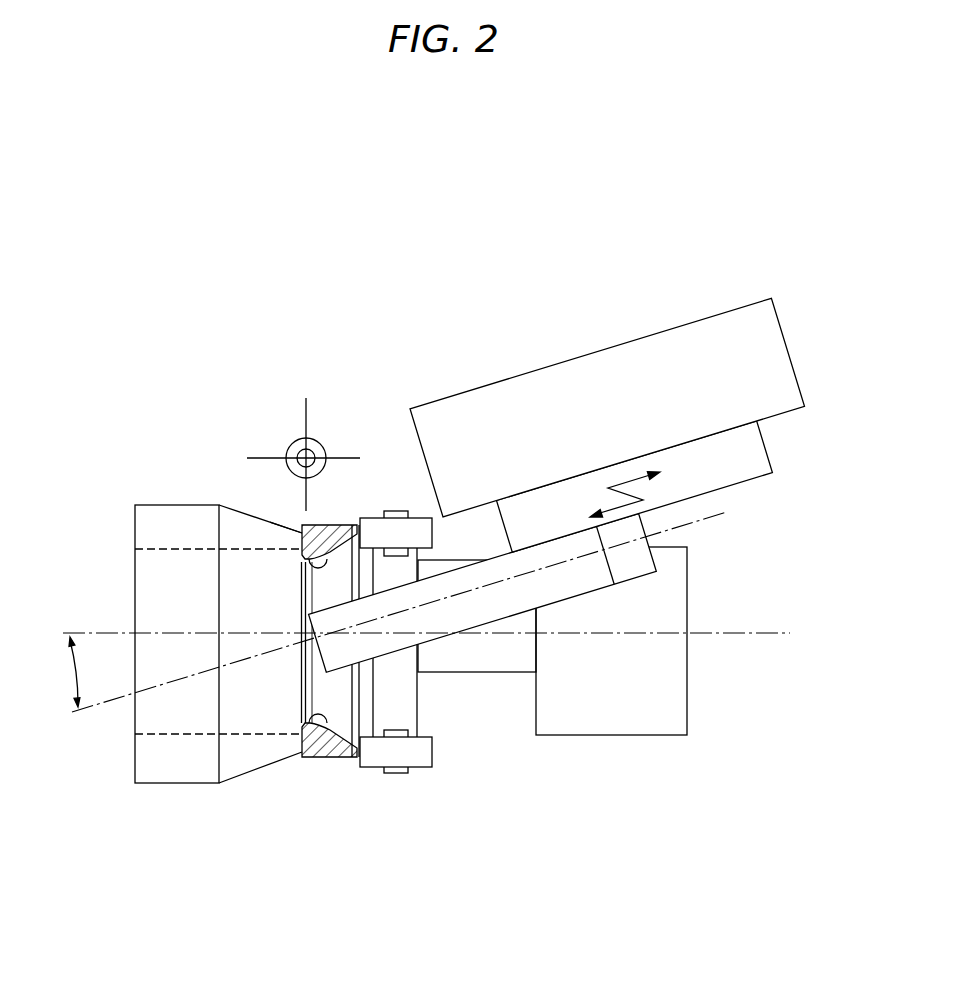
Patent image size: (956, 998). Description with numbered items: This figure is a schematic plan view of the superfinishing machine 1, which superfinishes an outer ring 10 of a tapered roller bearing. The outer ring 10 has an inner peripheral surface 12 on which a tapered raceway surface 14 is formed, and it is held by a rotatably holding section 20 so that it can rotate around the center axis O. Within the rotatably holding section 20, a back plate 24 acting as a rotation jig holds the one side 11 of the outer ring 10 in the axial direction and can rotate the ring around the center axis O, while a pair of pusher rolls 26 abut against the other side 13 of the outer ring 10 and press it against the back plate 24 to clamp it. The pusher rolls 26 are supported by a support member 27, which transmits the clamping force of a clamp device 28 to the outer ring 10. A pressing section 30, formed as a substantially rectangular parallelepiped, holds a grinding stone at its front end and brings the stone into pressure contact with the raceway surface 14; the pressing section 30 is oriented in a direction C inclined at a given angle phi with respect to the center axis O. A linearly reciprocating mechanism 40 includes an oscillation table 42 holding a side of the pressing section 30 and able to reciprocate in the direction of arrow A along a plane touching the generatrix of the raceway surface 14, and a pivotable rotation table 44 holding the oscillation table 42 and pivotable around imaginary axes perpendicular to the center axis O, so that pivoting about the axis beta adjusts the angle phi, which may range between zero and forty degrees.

The superfinishing machine 1 is at (605, 239).
The outer ring 10 is at (320, 536).
The one side 11 is at (293, 530).
The inner peripheral surface 12 is at (304, 525).
The other side 13 is at (361, 533).
The tapered raceway surface 14 is at (331, 707).
The rotatably holding section 20 is at (260, 799).
The back plate 24 is at (175, 777).
The pusher rolls 26 is at (397, 528).
The support member 27 is at (452, 663).
The clamp device 28 is at (613, 728).
The pressing section 30 is at (507, 622).
The linearly reciprocating mechanism 40 is at (623, 407).
The oscillation table 42 is at (757, 461).
The rotation table 44 is at (770, 343).